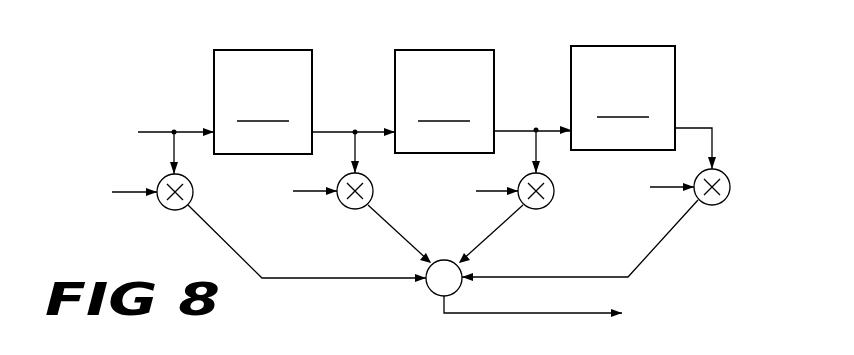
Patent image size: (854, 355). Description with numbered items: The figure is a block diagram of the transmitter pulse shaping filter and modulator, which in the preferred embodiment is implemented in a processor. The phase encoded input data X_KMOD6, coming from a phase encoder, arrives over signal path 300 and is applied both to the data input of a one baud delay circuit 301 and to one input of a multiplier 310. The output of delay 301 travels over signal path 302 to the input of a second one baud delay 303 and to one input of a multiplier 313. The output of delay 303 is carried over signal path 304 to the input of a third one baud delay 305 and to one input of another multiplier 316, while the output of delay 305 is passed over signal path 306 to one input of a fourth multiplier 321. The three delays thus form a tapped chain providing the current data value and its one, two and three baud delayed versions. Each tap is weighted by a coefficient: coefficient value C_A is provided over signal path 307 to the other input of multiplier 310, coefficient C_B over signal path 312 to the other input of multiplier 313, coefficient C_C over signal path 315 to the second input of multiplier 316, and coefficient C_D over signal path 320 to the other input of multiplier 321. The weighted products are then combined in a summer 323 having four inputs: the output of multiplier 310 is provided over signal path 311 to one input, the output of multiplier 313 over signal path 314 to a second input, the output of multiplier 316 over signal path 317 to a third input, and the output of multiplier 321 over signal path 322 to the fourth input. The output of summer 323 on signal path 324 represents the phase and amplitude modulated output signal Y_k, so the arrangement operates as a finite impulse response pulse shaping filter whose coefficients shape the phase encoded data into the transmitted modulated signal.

The signal path 300 is at (165, 130).
The one baud delay circuit 301 is at (257, 50).
The signal path 302 is at (361, 130).
The one baud delay 303 is at (431, 50).
The signal path 304 is at (516, 128).
The one baud delay 305 is at (610, 46).
The signal path 306 is at (689, 127).
The signal path 307 is at (124, 194).
The multiplier 310 is at (193, 197).
The signal path 311 is at (238, 250).
The signal path 312 is at (300, 193).
The multiplier 313 is at (372, 192).
The signal path 314 is at (396, 229).
The signal path 315 is at (480, 193).
The multiplier 316 is at (552, 195).
The signal path 317 is at (495, 232).
The signal path 320 is at (665, 189).
The multiplier 321 is at (730, 186).
The signal path 322 is at (655, 246).
The summer 323 is at (429, 293).
The signal path 324 is at (508, 314).